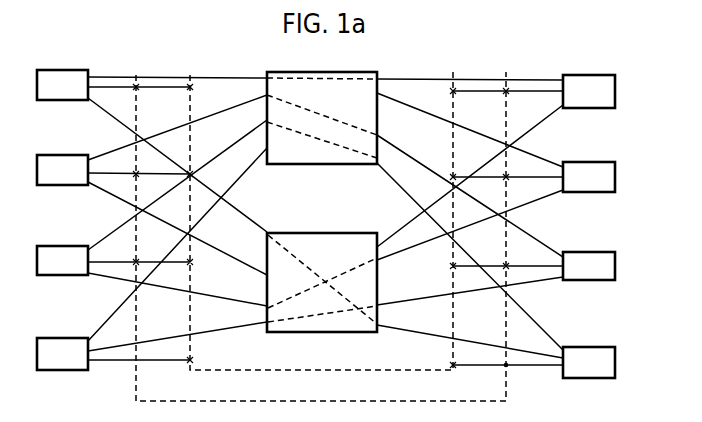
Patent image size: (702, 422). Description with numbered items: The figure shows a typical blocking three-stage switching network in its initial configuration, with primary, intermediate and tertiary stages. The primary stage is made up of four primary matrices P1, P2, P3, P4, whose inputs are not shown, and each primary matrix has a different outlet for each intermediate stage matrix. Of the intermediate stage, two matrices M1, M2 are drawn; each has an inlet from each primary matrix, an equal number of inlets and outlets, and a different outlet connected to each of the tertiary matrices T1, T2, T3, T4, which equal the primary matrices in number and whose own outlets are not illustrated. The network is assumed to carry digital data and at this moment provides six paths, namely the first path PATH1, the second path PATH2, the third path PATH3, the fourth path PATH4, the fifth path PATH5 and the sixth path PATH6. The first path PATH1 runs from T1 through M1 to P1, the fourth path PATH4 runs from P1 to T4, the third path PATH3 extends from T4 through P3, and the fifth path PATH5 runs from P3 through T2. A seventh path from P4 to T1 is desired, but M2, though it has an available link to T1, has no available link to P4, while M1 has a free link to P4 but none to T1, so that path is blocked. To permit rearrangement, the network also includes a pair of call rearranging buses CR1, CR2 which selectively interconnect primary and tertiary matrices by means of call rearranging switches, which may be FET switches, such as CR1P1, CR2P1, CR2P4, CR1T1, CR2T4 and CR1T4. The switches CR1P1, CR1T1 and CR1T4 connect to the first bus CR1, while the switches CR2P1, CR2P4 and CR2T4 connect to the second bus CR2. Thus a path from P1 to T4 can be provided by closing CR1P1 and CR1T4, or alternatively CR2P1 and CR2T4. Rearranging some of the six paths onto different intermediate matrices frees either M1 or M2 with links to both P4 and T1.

The primary stage matrix P1 is at (62, 85).
The primary stage matrix P2 is at (62, 170).
The primary stage matrix P3 is at (62, 260).
The primary stage matrix P4 is at (62, 354).
The tertiary stage matrix T1 is at (589, 91).
The tertiary stage matrix T2 is at (589, 177).
The tertiary stage matrix T3 is at (589, 266).
The tertiary stage matrix T4 is at (589, 362).
The intermediate stage matrix M1 is at (322, 118).
The intermediate stage matrix M2 is at (322, 282).
The path 1 PATH1 is at (325, 69).
The path 2 PATH2 is at (177, 122).
The path 3 PATH3 is at (177, 176).
The path 4 PATH4 is at (180, 169).
The path 5 PATH5 is at (177, 291).
The path 6 PATH6 is at (177, 330).
The call rearranging bus CR1 is at (260, 401).
The call rearranging bus CR2 is at (292, 370).
The call rearranging switch CR1P1 is at (137, 86).
The call rearranging switch CR2P1 is at (190, 85).
The call rearranging switch CR2P4 is at (192, 361).
The call rearranging switch CR1T1 is at (453, 89).
The call rearranging switch CR2T4 is at (452, 365).
The call rearranging switch CR1T4 is at (507, 368).